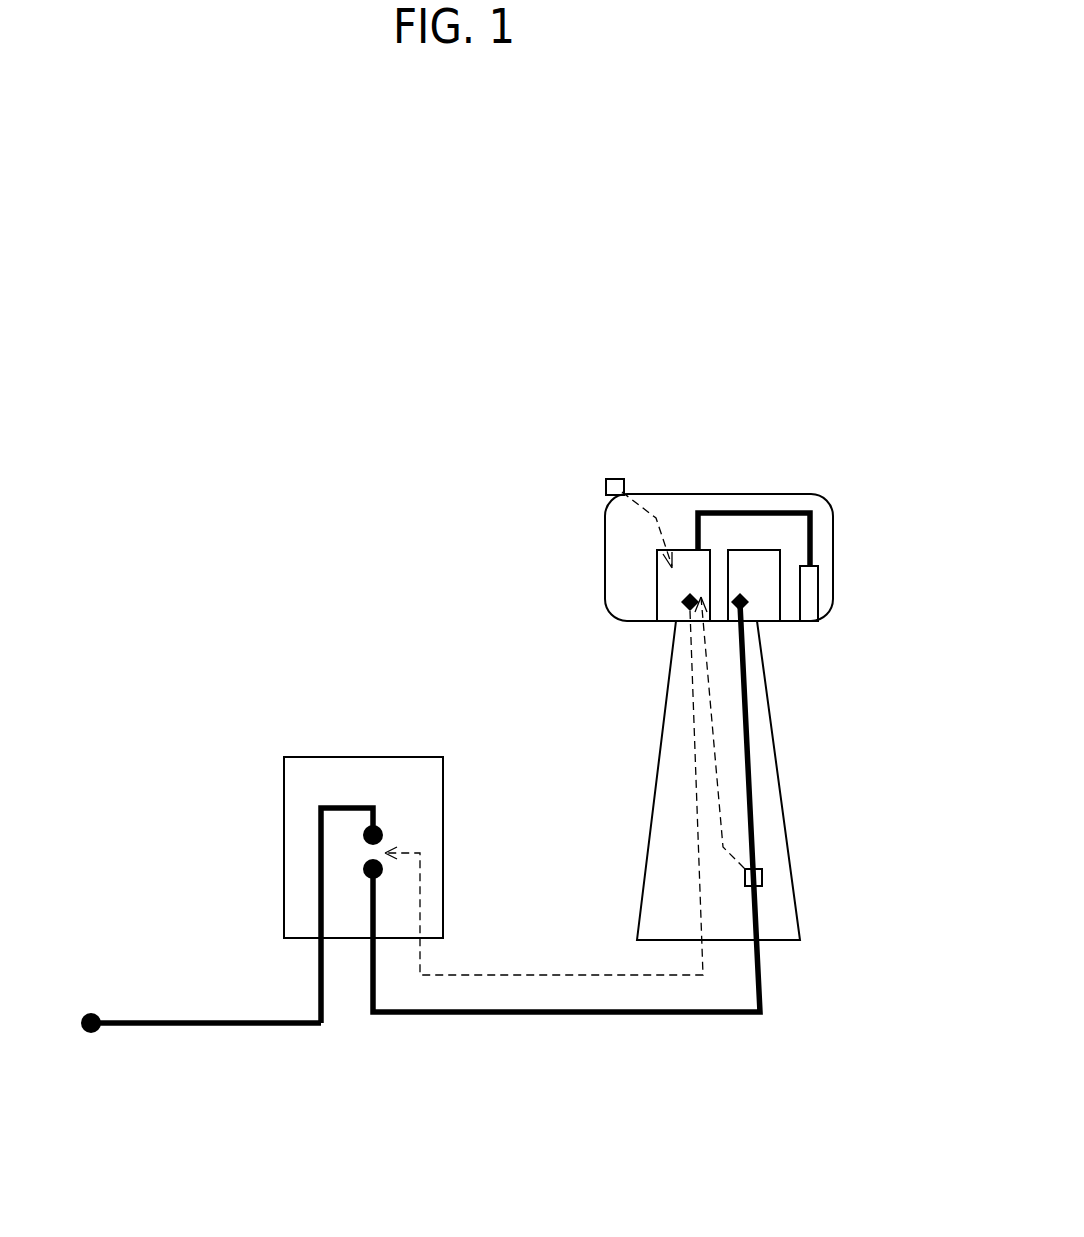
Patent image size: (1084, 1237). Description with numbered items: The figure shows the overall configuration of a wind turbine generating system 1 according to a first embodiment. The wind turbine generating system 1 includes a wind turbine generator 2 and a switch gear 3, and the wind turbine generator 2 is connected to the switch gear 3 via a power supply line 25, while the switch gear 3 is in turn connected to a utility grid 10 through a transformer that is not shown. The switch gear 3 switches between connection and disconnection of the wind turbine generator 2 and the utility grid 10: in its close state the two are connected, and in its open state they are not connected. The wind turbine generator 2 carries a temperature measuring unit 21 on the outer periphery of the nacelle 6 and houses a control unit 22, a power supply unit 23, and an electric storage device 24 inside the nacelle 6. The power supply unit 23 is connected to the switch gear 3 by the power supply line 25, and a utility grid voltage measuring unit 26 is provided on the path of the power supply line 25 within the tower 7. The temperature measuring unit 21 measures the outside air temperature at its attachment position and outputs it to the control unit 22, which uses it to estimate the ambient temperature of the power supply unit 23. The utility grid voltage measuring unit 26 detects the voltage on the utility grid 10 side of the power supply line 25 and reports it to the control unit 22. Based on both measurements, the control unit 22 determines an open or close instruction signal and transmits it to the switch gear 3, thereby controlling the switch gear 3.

The wind turbine generating system 1 is at (323, 314).
The wind turbine generator 2 is at (852, 440).
The switch gear 3 is at (354, 757).
The nacelle 6 is at (833, 548).
The tower 7 is at (784, 803).
The utility grid 10 is at (92, 1035).
The temperature measuring unit 21 is at (606, 487).
The control unit 22 is at (676, 549).
The power supply unit 23 is at (780, 598).
The electric storage device 24 is at (818, 583).
The power supply line 25 is at (626, 1015).
The utility grid voltage measuring unit 26 is at (762, 877).